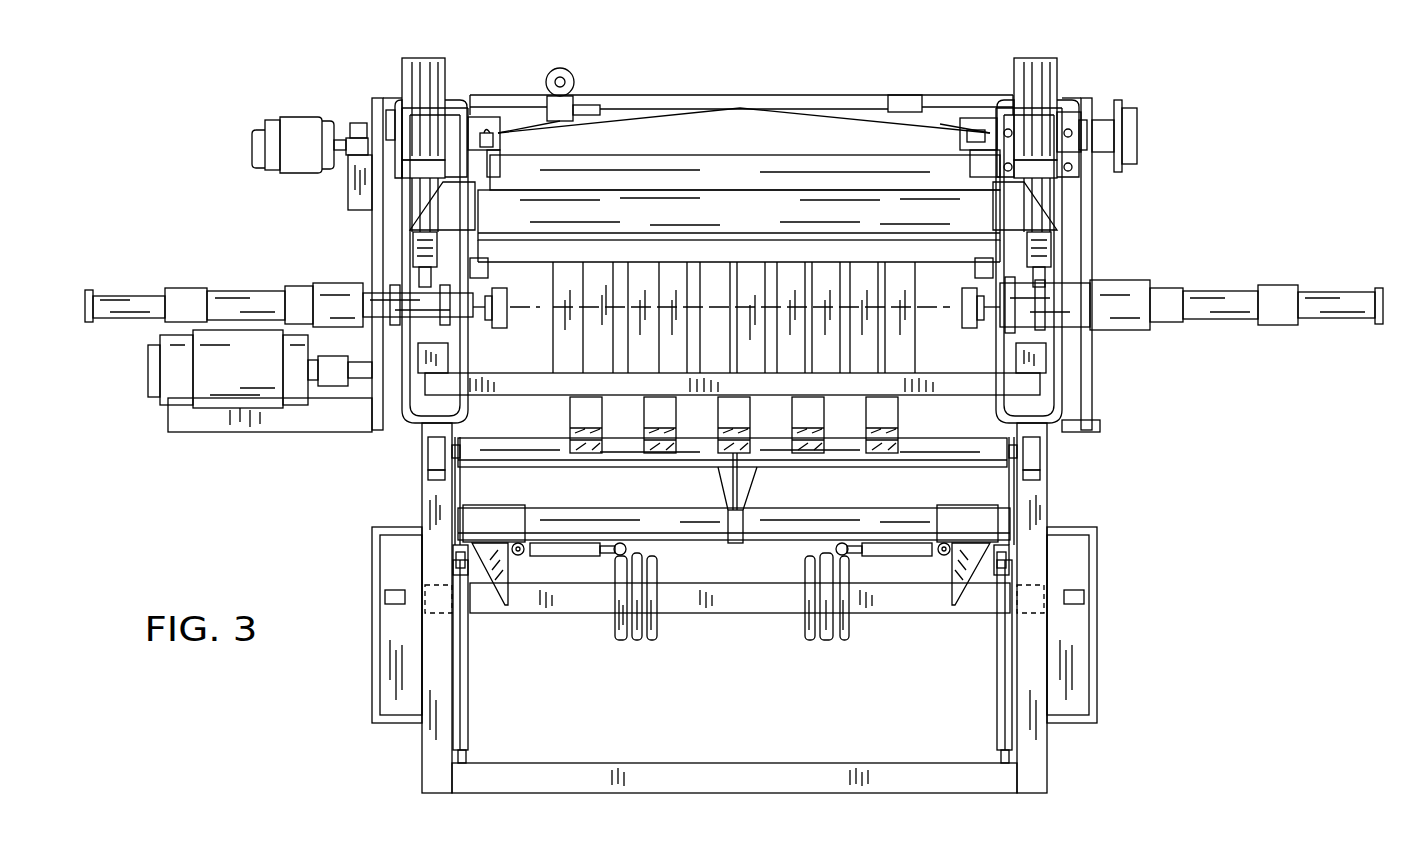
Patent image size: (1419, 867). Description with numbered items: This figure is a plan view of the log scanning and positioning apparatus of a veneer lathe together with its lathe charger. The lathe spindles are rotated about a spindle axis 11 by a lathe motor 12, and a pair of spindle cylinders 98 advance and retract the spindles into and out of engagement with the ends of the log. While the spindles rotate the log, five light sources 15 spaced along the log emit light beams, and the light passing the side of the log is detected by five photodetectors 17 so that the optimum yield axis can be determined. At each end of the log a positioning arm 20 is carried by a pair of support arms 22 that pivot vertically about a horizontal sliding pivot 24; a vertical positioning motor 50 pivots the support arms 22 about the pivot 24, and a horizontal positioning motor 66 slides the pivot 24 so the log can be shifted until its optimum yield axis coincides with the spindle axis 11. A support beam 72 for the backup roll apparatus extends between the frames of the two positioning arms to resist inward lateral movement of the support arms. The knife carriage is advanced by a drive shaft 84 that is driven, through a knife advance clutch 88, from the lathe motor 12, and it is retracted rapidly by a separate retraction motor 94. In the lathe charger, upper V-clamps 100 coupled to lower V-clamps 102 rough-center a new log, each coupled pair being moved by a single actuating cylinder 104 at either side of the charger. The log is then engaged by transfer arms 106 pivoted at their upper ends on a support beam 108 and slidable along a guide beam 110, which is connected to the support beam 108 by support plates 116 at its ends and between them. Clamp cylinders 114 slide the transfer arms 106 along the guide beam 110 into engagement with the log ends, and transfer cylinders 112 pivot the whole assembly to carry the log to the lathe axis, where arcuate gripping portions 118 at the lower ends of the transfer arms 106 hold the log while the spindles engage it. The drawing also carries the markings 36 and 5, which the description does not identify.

The retraction motor 94 is at (298, 117).
The horizontal sliding pivot 24 is at (1078, 100).
The knife advance clutch 88 is at (1137, 125).
The drive shaft 84 is at (752, 155).
The horizontal positioning motor 66 is at (430, 186).
The support beam 72 is at (733, 212).
The vertical positioning motor 50 is at (430, 240).
The light sources 15 is at (598, 262).
The support arms 22 is at (1020, 266).
The shaft 36 is at (368, 300).
The positioning arm 20 is at (500, 328).
The spindle axis 11 is at (752, 300).
The spindle cylinders 98 is at (1340, 292).
The section line 5 is at (937, 268).
The lathe motor 12 is at (242, 408).
The support plates 116 is at (462, 480).
The photodetectors 17 is at (660, 453).
The support beam 108 is at (695, 467).
The guide beam 110 is at (768, 540).
The clamp cylinders 114 is at (598, 590).
The transfer arms 106 is at (508, 562).
The arcuate gripping portions 118 is at (540, 598).
The upper V-clamps 100 is at (638, 642).
The lower V-clamps 102 is at (621, 642).
The transfer cylinders 112 is at (468, 670).
The actuating cylinders 104 is at (385, 598).